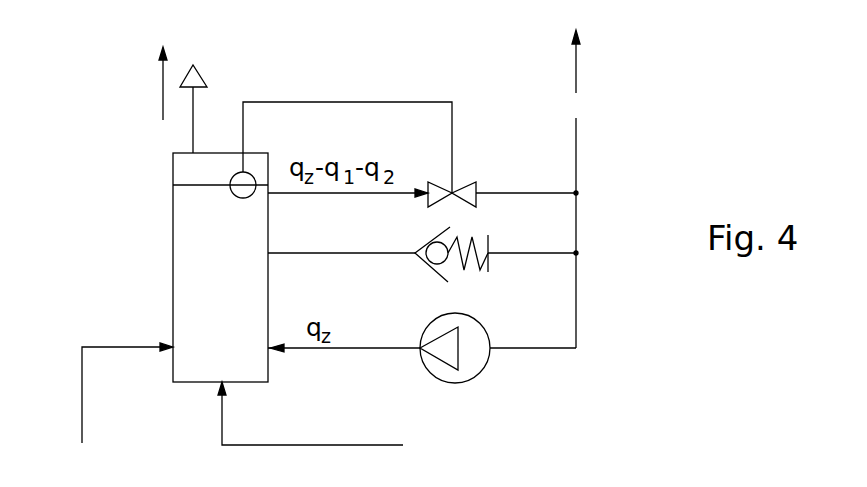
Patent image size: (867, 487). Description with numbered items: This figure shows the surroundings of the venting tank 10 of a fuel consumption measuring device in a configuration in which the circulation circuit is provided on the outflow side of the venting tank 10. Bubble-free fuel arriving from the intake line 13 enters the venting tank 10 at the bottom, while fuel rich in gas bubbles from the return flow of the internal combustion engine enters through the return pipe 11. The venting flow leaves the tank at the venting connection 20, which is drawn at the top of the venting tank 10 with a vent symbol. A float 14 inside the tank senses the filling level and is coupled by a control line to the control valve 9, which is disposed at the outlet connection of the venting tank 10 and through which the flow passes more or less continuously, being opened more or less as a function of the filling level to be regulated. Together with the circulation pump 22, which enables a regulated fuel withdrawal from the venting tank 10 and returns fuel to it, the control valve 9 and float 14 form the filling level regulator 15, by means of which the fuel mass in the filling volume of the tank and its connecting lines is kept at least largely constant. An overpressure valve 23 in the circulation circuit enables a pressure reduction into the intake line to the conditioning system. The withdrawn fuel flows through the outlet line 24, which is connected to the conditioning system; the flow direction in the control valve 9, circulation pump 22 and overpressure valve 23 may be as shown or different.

The control valve 9 is at (472, 183).
The venting tank 10 is at (173, 283).
The return pipe 11 is at (82, 405).
The intake line 13 is at (347, 445).
The float 14 is at (232, 197).
The filling level regulator 15 is at (419, 91).
The venting connection 20 is at (188, 140).
The circulation pump 22 is at (475, 378).
The overpressure valve 23 is at (440, 232).
The outlet line 24 is at (577, 150).